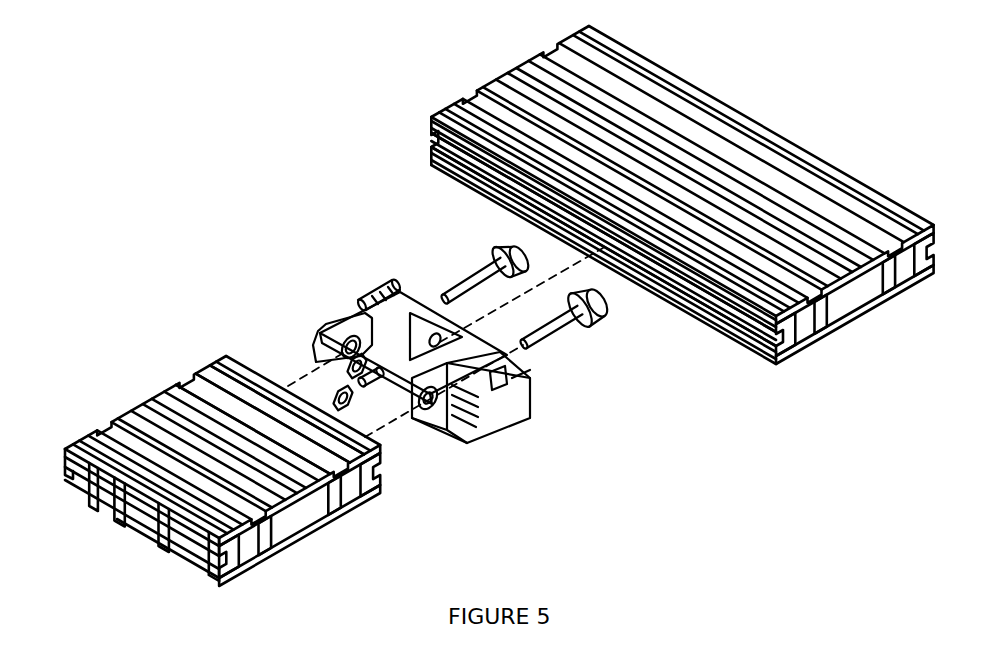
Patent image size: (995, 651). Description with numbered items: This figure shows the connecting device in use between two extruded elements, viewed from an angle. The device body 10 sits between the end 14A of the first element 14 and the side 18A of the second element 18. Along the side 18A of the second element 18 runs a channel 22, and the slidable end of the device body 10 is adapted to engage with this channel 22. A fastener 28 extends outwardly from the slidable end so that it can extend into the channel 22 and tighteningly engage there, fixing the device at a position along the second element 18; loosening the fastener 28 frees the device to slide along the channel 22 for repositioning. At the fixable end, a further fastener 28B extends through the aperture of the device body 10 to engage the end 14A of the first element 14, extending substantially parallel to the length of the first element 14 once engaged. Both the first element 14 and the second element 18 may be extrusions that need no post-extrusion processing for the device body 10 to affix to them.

The device body 10 is at (382, 318).
The first element 14 is at (222, 422).
The end of the first element 14A is at (262, 345).
The second element 18 is at (632, 229).
The side of the second element 18A is at (698, 293).
The channel 22 is at (698, 397).
The fastener 28 is at (365, 388).
The further fastener 28B is at (488, 276).